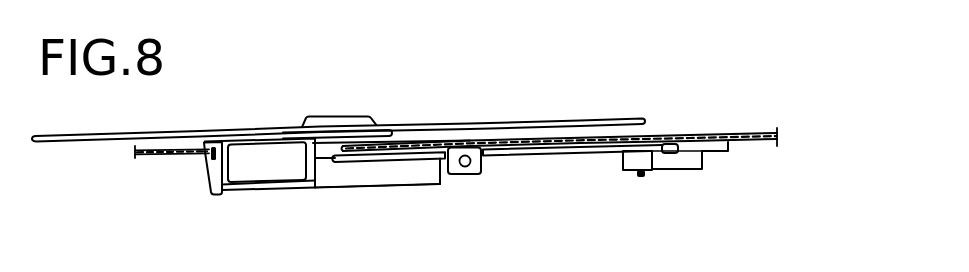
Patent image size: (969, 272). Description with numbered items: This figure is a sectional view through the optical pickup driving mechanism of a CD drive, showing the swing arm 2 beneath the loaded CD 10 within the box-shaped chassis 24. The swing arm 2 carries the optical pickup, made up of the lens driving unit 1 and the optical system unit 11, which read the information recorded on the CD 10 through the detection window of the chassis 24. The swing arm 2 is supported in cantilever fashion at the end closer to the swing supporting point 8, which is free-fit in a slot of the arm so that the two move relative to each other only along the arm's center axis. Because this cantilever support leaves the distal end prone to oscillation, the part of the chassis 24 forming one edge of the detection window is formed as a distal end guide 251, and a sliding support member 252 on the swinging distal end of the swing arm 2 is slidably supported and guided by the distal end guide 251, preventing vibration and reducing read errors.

The lens driving unit 1 is at (273, 172).
The swing arm 2 is at (538, 156).
The swing supporting point 8 is at (641, 172).
The CD 10 is at (507, 122).
The optical system unit 11 is at (374, 176).
The chassis 24 is at (711, 134).
The distal end guide 251 is at (156, 157).
The sliding support member 252 is at (211, 186).